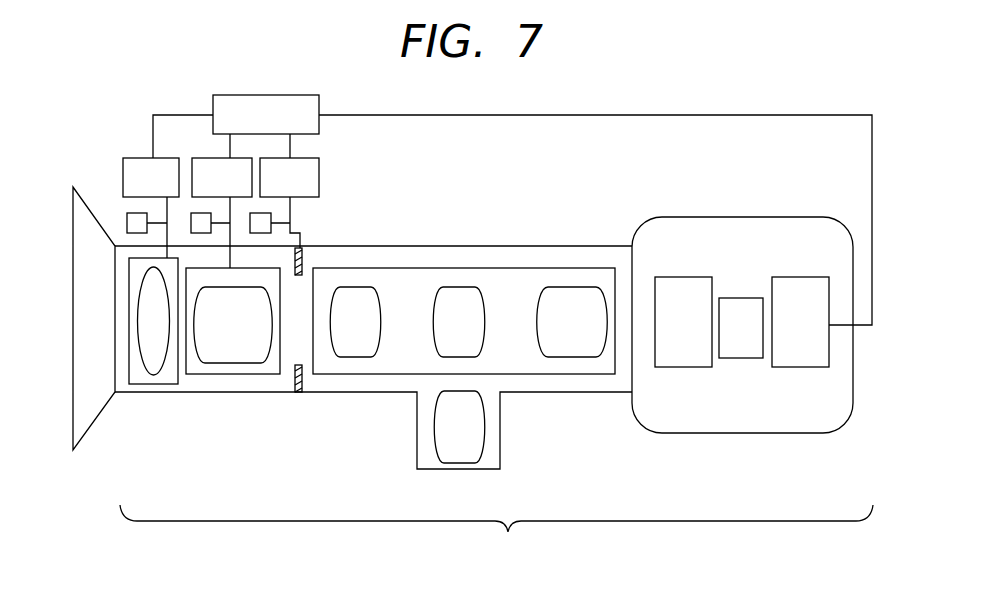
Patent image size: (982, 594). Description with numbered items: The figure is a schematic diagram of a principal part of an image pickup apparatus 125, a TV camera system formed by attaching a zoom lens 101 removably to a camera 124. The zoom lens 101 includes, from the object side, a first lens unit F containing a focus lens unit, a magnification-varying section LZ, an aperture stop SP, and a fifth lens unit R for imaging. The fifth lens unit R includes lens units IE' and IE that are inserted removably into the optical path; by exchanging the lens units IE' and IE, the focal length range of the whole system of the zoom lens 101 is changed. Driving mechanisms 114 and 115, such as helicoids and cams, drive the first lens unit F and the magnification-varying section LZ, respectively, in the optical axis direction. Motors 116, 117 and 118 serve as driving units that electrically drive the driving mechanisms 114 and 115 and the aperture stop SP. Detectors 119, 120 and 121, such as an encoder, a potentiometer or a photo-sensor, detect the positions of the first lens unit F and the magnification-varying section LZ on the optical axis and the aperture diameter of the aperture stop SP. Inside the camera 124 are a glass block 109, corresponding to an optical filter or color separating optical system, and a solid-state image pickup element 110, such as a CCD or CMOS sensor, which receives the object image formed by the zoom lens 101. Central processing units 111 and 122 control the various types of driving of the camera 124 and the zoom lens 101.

The zoom lens 101 is at (85, 203).
The glass block 109 is at (683, 322).
The solid-state image pickup element 110 is at (741, 328).
The central processing unit 111 is at (800, 322).
The driving mechanism 114 is at (150, 384).
The driving mechanism 115 is at (230, 374).
The motor 116 is at (151, 177).
The motor 117 is at (222, 177).
The motor 118 is at (289, 177).
The detector 119 is at (128, 219).
The detector 120 is at (192, 218).
The detector 121 is at (271, 222).
The central processing unit 122 is at (266, 114).
The camera 124 is at (740, 433).
The image pickup apparatus 125 is at (496, 535).
The aperture stop SP is at (297, 392).
The fifth lens unit R is at (574, 268).
The lens unit IE' is at (459, 270).
The lens unit IE is at (420, 427).